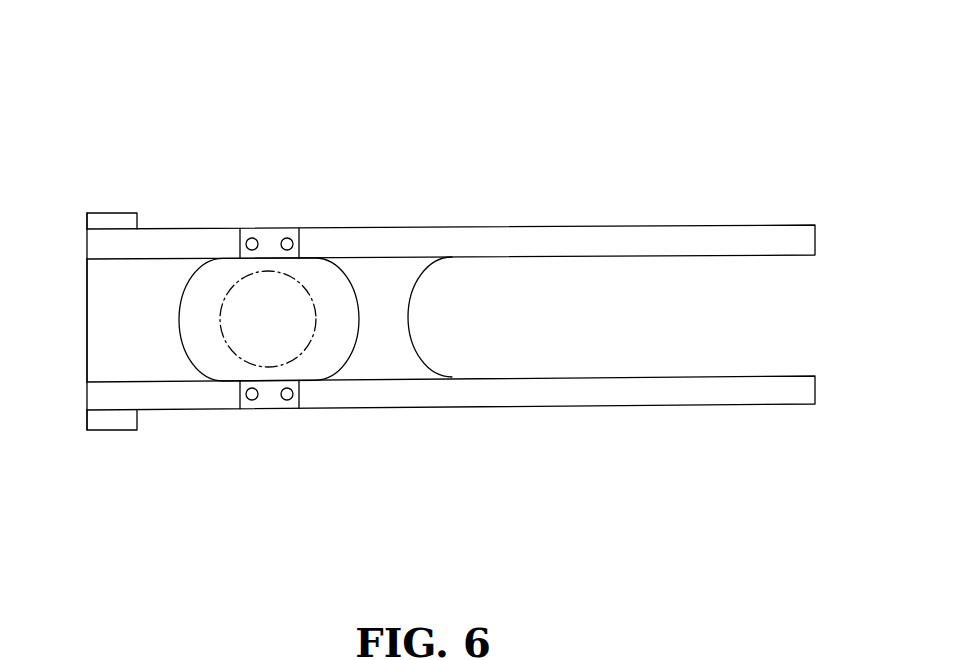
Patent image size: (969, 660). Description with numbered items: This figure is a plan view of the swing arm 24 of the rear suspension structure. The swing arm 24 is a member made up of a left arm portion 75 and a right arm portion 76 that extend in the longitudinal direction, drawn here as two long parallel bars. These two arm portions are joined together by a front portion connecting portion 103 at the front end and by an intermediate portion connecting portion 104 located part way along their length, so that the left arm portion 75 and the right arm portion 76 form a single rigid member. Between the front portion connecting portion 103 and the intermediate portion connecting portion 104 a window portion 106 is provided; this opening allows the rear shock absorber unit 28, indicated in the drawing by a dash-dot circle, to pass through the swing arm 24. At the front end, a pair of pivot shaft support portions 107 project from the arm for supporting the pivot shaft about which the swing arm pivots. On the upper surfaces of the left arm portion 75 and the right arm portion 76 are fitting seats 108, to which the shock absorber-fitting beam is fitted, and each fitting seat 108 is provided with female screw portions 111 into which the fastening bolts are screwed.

The swing arm 24 is at (178, 118).
The rear shock absorber unit 28 is at (305, 285).
The left arm portion 75 is at (468, 404).
The right arm portion 76 is at (555, 225).
The front portion connecting portion 103 is at (140, 353).
The intermediate portion connecting portion 104 is at (383, 318).
The window portion 106 is at (338, 347).
The pivot shaft support portion 107 is at (112, 213).
The fitting seat 108 is at (268, 229).
The female screw portion 111 is at (253, 229).